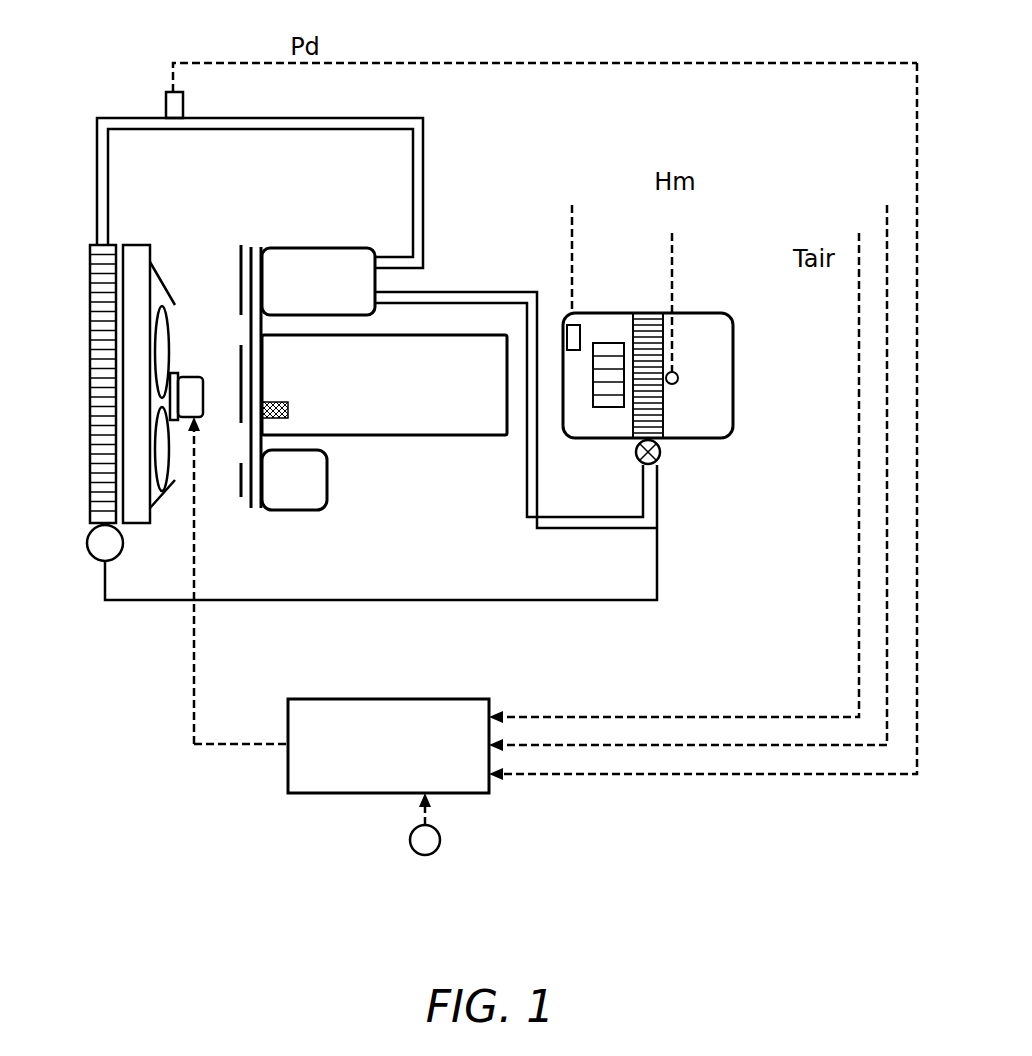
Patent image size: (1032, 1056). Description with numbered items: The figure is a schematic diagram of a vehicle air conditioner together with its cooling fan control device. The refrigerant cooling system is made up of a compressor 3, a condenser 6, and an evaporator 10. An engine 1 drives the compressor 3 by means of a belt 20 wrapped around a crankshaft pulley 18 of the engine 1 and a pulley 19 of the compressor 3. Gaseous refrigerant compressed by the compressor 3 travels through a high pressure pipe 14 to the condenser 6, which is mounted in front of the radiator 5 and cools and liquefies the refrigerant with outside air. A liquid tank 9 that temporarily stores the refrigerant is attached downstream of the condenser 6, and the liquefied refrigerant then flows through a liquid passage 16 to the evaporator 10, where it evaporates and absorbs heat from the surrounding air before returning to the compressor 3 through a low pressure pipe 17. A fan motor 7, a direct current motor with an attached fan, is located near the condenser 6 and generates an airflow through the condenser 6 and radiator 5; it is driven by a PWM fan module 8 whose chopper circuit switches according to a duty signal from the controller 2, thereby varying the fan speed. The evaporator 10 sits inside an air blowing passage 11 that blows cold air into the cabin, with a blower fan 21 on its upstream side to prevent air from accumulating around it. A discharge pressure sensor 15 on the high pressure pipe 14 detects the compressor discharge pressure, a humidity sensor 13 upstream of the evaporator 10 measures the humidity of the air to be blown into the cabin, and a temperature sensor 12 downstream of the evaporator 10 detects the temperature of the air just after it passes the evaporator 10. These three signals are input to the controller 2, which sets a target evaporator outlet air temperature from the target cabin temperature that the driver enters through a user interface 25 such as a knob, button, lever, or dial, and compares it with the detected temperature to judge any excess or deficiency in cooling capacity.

The engine 1 is at (445, 437).
The controller 2 is at (390, 699).
The compressor 3 is at (314, 247).
The radiator 5 is at (128, 243).
The condenser 6 is at (90, 318).
The fan motor 7 is at (170, 333).
The PWM fan module 8 is at (195, 377).
The liquid tank 9 is at (87, 541).
The evaporator 10 is at (632, 328).
The air blowing passage 11 is at (718, 312).
The temperature sensor 12 is at (677, 387).
The humidity sensor 13 is at (567, 332).
The high pressure pipe 14 is at (423, 172).
The discharge pressure sensor 15 is at (165, 107).
The liquid passage 16 is at (548, 600).
The low pressure pipe 17 is at (560, 530).
The crankshaft pulley 18 is at (240, 407).
The pulley 19 is at (240, 275).
The belt 20 is at (256, 508).
The blower fan 21 is at (610, 410).
The user interface 25 is at (413, 838).